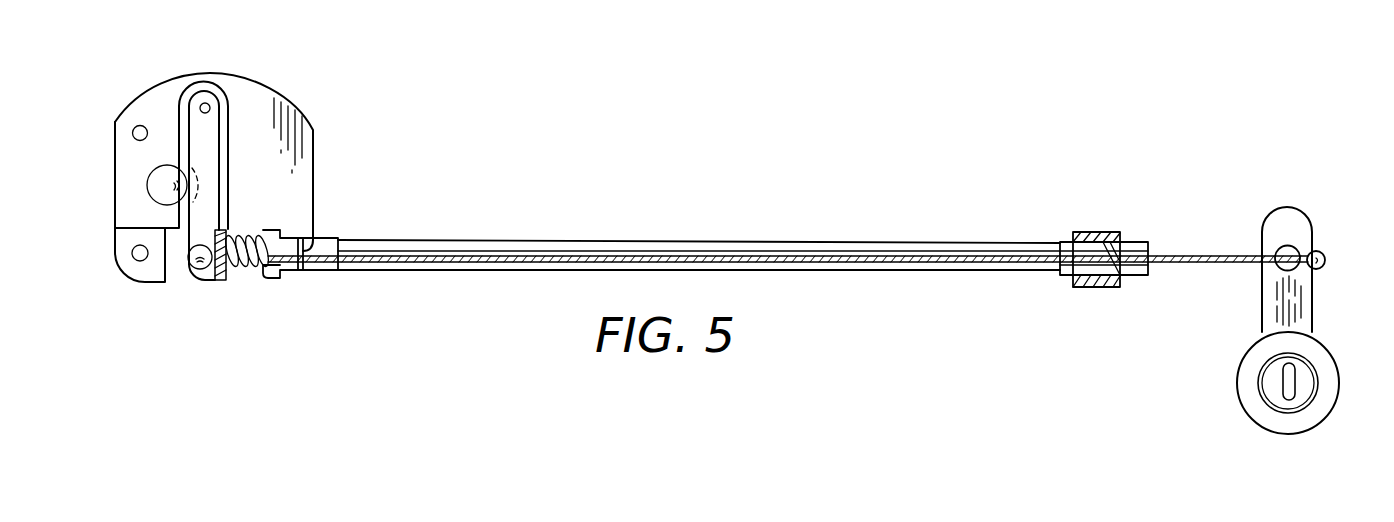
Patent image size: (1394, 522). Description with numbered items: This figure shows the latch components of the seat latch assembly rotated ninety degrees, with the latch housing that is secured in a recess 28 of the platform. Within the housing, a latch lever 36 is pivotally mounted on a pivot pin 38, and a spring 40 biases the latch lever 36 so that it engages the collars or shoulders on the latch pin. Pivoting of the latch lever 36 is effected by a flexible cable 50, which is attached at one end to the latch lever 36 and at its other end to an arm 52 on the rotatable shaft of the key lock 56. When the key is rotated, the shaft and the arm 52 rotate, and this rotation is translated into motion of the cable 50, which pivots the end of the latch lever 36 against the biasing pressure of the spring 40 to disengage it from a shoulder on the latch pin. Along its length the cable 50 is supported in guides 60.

The recess 28 is at (146, 205).
The latch lever 36 is at (205, 148).
The pivot pin 38 is at (284, 245).
The spring 40 is at (272, 237).
The flexible cable 50 is at (706, 258).
The arm 52 is at (1302, 233).
The key lock 56 is at (1324, 331).
The guides 60 is at (1120, 240).